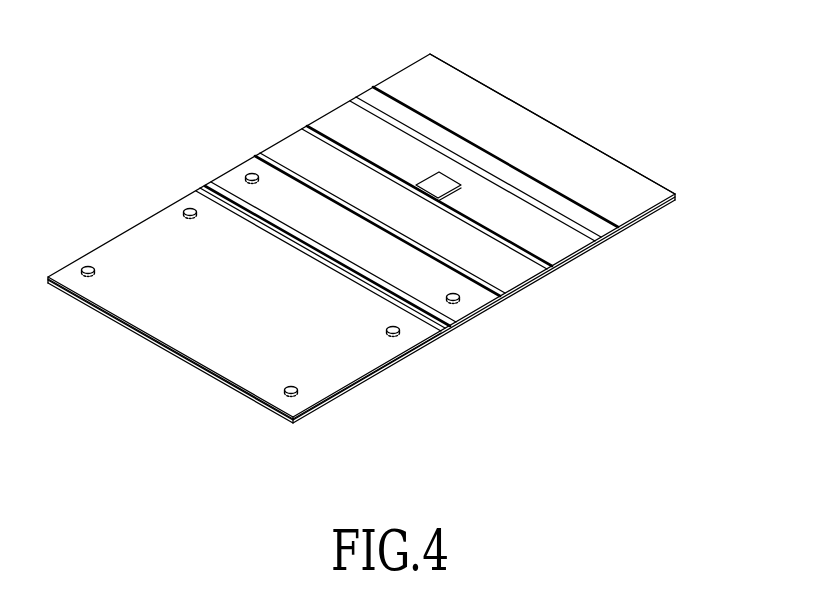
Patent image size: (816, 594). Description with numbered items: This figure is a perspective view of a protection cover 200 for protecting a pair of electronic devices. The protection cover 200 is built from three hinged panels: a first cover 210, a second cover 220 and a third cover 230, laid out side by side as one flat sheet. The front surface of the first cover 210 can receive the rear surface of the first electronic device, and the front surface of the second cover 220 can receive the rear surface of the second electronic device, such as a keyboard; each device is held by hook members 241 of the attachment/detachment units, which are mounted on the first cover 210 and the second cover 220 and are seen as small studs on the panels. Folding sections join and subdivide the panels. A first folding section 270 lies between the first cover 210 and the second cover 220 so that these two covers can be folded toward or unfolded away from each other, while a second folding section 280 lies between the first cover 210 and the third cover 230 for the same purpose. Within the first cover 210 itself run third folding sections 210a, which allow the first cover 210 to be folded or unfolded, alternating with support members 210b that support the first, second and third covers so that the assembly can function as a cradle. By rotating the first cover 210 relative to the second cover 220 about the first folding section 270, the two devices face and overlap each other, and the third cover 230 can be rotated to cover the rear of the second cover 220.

The protection cover 200 is at (570, 77).
The first cover 210 is at (628, 276).
The third folding sections 210a is at (552, 268).
The support members 210b is at (525, 282).
The second cover 220 is at (381, 372).
The third cover 230 is at (609, 167).
The hook member 241 is at (393, 328).
The first folding section 270 is at (442, 333).
The second folding section 280 is at (610, 235).